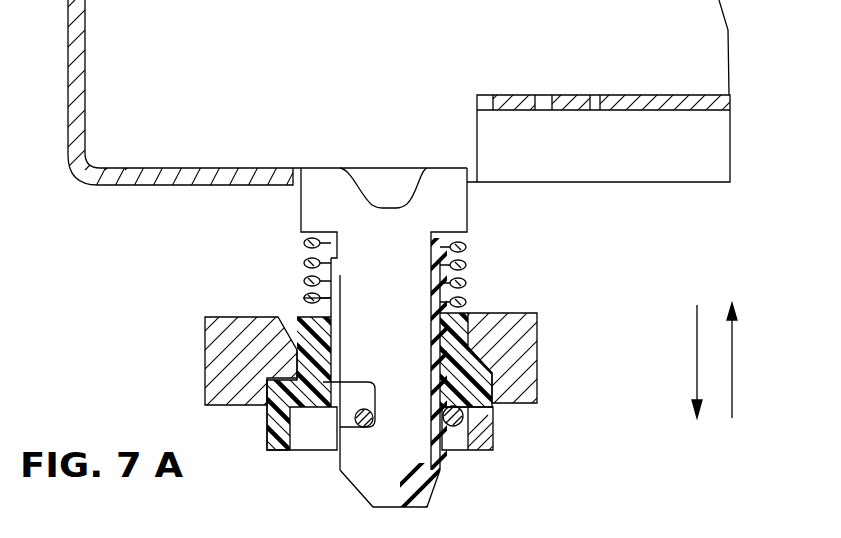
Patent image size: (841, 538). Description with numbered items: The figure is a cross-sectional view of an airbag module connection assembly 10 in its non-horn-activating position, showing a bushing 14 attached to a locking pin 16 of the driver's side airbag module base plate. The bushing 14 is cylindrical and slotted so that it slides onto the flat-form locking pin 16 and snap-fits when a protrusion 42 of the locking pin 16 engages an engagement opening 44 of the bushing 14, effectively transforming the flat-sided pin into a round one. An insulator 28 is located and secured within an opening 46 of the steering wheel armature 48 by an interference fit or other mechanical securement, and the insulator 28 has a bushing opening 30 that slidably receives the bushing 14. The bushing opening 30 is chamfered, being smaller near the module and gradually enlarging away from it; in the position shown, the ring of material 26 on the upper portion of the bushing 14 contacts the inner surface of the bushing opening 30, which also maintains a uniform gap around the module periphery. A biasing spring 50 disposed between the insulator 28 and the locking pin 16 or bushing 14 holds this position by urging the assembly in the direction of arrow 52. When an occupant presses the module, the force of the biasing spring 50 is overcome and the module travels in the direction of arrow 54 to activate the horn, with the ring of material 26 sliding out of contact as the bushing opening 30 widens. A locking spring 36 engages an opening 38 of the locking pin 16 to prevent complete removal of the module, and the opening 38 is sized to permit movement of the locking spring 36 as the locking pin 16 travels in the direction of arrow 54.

The airbag module connection assembly 10 is at (615, 247).
The bushing 14 is at (462, 241).
The locking pin 16 is at (450, 213).
The ring of material 26 is at (478, 313).
The insulator 28 is at (487, 408).
The bushing opening 30 is at (447, 413).
The locking spring 36 is at (352, 409).
The opening of the locking pin 38 is at (355, 387).
The protrusion of the locking pin 42 is at (375, 272).
The engagement opening 44 is at (318, 282).
The opening of the steering wheel armature 46 is at (267, 405).
The steering wheel armature 48 is at (538, 348).
The biasing spring 50 is at (313, 298).
The arrow 52 is at (732, 365).
The arrow 54 is at (697, 373).